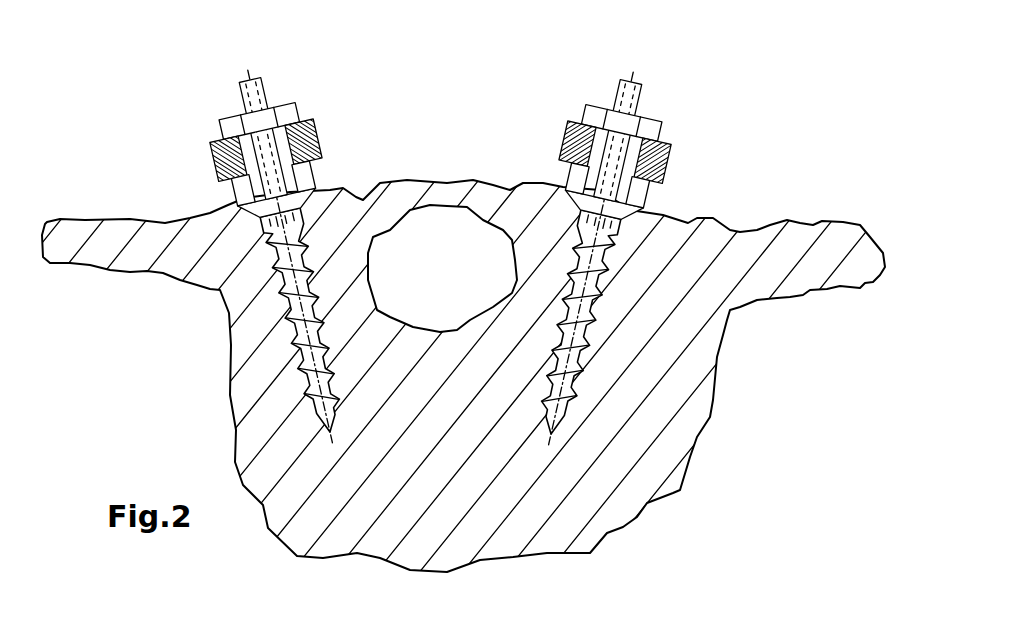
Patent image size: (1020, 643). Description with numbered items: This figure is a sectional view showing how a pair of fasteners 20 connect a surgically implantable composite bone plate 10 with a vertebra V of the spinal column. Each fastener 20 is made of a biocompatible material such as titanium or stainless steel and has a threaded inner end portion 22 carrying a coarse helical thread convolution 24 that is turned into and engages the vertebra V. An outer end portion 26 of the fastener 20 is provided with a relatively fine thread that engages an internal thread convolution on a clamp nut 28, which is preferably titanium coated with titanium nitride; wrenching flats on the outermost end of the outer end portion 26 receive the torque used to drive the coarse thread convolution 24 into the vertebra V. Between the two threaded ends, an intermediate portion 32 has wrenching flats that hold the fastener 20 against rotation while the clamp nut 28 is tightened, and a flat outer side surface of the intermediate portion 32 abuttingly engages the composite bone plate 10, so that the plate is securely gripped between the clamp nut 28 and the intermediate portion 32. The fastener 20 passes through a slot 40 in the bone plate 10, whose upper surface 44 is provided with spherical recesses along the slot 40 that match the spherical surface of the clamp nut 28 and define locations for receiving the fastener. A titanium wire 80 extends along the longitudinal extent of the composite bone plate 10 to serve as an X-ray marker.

The composite bone plate 10 is at (460, 242).
The fastener 20 is at (460, 260).
The threaded inner end portion 22 is at (293, 303).
The coarse helical thread convolution 24 is at (283, 277).
The outer end portion 26 is at (243, 83).
The clamp nut 28 is at (300, 110).
The intermediate portion 32 is at (247, 188).
The slot 40 is at (300, 163).
The upper surface 44 is at (220, 137).
The titanium wire 80 is at (297, 143).
The vertebra V is at (250, 375).